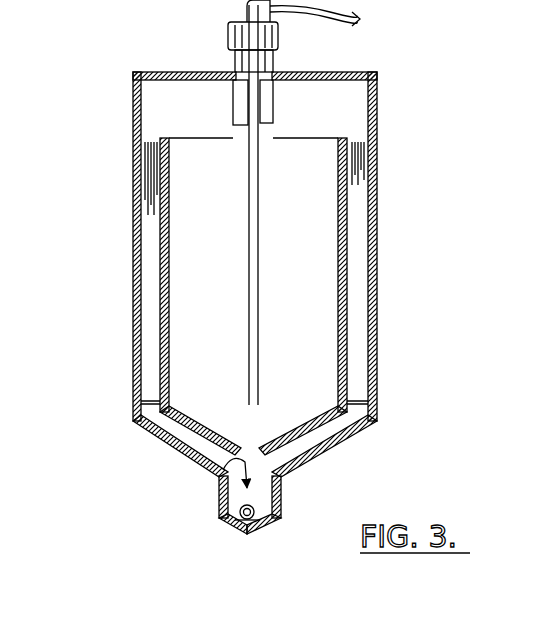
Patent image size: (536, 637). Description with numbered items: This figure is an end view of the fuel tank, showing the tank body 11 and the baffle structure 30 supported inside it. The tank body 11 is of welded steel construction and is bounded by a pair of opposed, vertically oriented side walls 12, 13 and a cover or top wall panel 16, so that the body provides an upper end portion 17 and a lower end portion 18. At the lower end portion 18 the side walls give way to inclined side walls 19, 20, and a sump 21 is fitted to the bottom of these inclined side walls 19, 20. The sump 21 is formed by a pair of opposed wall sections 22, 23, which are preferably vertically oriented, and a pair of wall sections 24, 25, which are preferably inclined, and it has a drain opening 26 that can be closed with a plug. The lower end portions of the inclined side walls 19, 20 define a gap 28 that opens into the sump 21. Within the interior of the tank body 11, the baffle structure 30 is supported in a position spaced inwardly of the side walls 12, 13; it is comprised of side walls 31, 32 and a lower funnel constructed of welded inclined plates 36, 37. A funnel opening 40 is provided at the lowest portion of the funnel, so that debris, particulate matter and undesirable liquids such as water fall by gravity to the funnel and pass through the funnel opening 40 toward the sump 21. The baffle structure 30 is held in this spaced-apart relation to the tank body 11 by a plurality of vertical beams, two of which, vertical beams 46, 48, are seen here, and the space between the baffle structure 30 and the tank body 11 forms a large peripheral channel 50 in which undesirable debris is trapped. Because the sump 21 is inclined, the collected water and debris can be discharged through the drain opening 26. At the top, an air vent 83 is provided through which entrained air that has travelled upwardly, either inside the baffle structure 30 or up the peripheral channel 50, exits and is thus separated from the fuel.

The tank body 11 is at (378, 78).
The side wall 12 is at (133, 218).
The side wall 13 is at (378, 238).
The top wall panel 16 is at (200, 72).
The upper end portion 17 is at (113, 110).
The lower end portion 18 is at (165, 471).
The inclined side wall 19 is at (163, 447).
The inclined side wall 20 is at (340, 446).
The sump 21 is at (275, 525).
The wall section 22 is at (215, 508).
The wall section 23 is at (283, 497).
The wall section 24 is at (225, 527).
The wall section 25 is at (265, 532).
The drain opening 26 is at (238, 530).
The gap 28 is at (223, 478).
The baffle structure 30 is at (378, 163).
The side wall 31 is at (150, 283).
The side wall 32 is at (345, 307).
The inclined plate 36 is at (198, 400).
The inclined plate 37 is at (287, 422).
The funnel opening 40 is at (253, 450).
The vertical beam 46 is at (148, 170).
The vertical beam 48 is at (357, 207).
The peripheral channel 50 is at (357, 152).
The air vent 83 is at (265, 60).